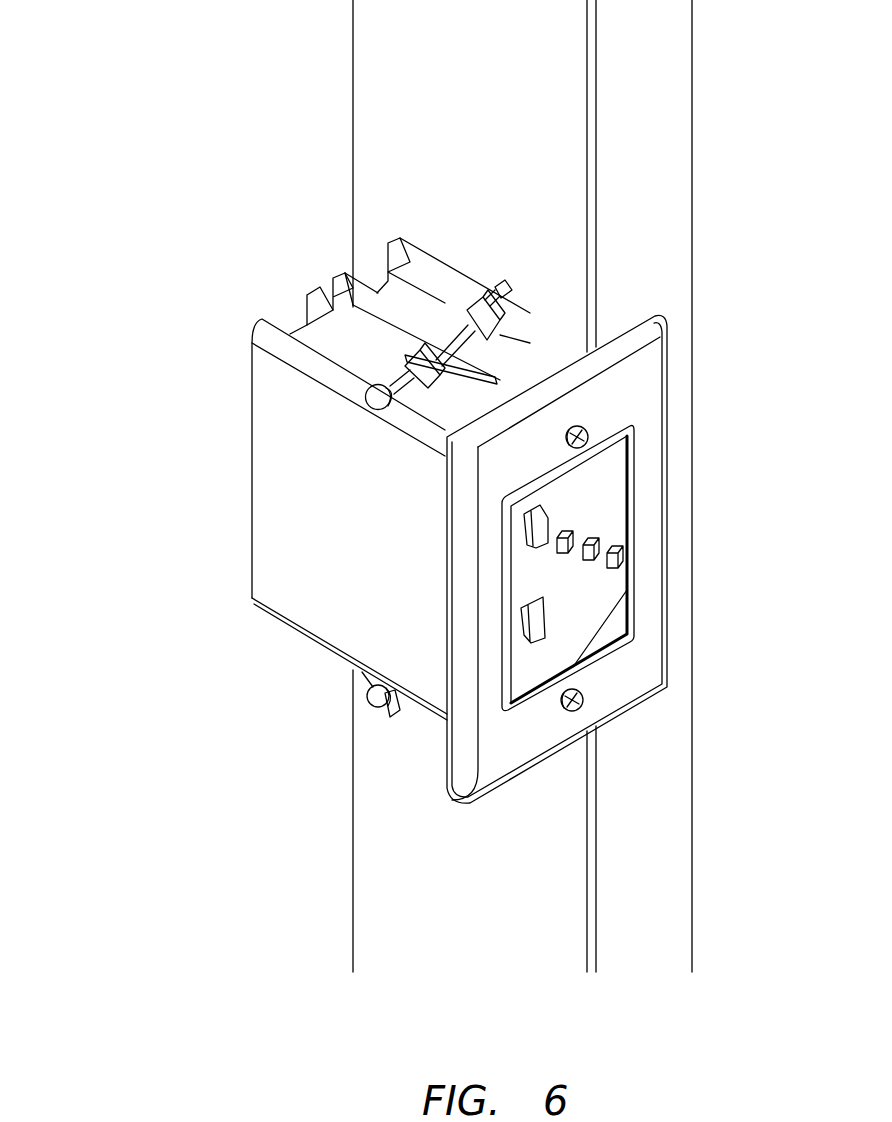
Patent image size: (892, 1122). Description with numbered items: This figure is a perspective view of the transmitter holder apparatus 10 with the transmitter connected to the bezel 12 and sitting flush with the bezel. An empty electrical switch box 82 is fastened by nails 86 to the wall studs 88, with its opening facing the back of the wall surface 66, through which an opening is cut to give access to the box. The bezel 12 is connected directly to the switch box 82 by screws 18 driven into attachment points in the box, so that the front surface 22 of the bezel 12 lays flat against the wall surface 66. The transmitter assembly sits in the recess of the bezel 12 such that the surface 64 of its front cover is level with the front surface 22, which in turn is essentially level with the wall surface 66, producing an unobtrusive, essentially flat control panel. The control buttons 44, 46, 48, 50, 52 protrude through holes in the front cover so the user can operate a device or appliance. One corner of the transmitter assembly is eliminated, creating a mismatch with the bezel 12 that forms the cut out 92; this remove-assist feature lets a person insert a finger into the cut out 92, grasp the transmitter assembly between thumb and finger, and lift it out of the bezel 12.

The transmitter holder apparatus 10 is at (148, 744).
The bezel 12 is at (488, 770).
The screws 18 is at (588, 430).
The front surface 22 is at (541, 745).
The button 44 is at (520, 536).
The button 46 is at (520, 627).
The button 48 is at (574, 535).
The button 50 is at (600, 547).
The button 52 is at (623, 556).
The surface of front cover 64 is at (629, 638).
The wall surface 66 is at (668, 128).
The electrical switch box 82 is at (272, 503).
The nails 86 is at (372, 400).
The wall studs 88 is at (482, 97).
The cut out 92 is at (640, 641).